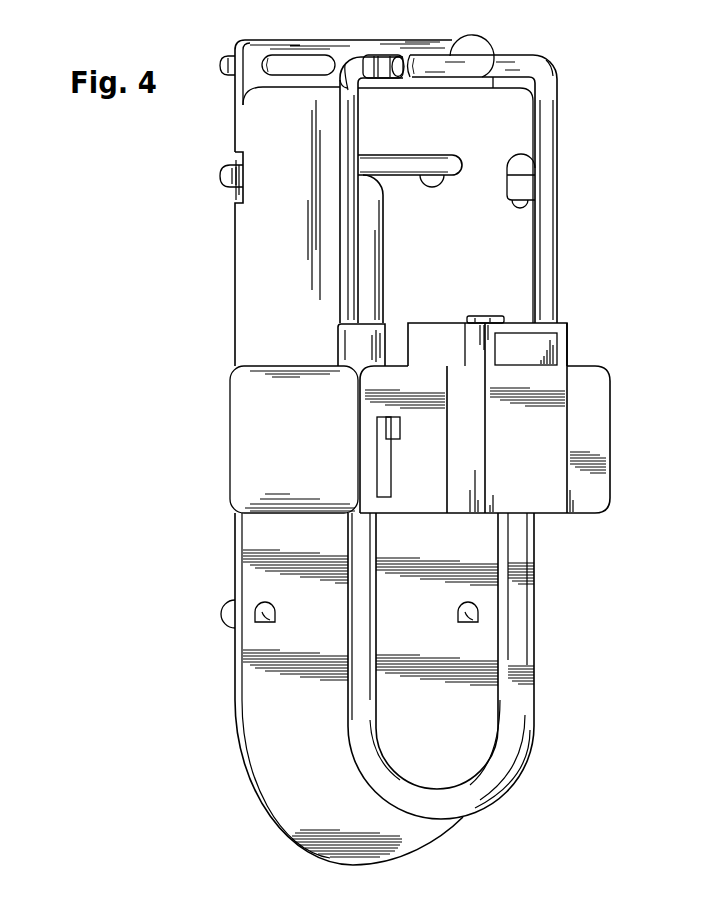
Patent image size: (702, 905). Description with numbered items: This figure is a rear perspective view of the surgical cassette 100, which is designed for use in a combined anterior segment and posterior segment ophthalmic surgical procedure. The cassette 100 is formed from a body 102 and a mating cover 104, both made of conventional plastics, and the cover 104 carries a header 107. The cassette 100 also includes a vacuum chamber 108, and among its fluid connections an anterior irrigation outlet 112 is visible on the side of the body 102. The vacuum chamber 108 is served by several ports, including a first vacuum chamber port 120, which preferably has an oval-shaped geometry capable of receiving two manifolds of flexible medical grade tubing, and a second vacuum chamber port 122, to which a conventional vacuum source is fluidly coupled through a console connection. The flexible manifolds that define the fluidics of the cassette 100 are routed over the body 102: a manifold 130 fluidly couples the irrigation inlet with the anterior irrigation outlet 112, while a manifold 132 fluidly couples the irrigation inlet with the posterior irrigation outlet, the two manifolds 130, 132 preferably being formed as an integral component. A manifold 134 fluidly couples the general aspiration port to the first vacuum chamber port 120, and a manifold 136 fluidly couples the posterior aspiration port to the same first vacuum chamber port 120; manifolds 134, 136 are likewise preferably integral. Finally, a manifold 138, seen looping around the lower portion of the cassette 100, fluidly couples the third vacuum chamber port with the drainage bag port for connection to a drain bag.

The surgical cassette 100 is at (431, 624).
The body 102 is at (293, 264).
The cover 104 is at (308, 732).
The header 107 is at (257, 57).
The vacuum chamber 108 is at (537, 427).
The anterior irrigation outlet 112 is at (220, 174).
The first vacuum chamber port 120 is at (338, 343).
The second vacuum chamber port 122 is at (490, 316).
The manifold 130 is at (450, 63).
The manifold 132 is at (558, 133).
The manifold 134 is at (383, 238).
The manifold 136 is at (328, 57).
The manifold 138 is at (376, 732).